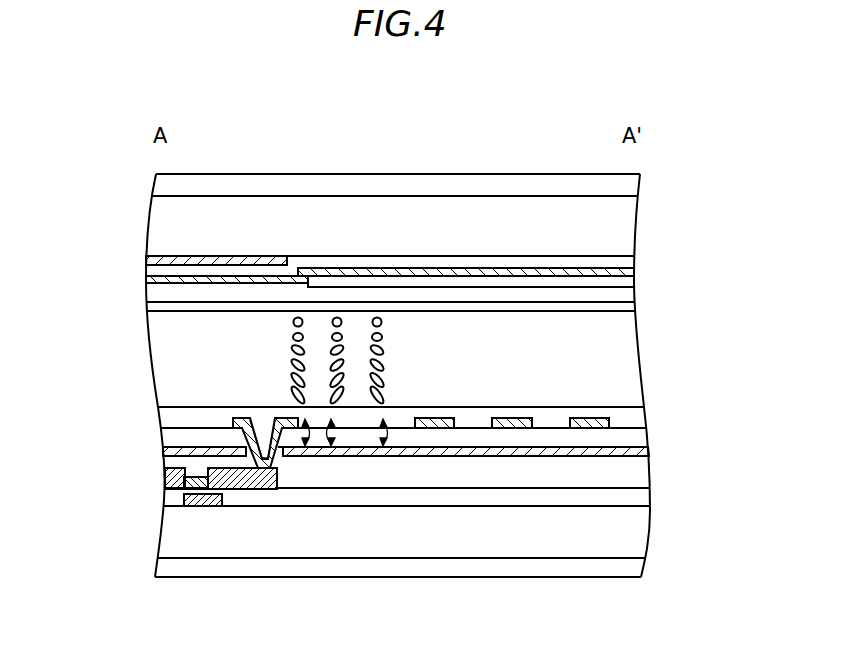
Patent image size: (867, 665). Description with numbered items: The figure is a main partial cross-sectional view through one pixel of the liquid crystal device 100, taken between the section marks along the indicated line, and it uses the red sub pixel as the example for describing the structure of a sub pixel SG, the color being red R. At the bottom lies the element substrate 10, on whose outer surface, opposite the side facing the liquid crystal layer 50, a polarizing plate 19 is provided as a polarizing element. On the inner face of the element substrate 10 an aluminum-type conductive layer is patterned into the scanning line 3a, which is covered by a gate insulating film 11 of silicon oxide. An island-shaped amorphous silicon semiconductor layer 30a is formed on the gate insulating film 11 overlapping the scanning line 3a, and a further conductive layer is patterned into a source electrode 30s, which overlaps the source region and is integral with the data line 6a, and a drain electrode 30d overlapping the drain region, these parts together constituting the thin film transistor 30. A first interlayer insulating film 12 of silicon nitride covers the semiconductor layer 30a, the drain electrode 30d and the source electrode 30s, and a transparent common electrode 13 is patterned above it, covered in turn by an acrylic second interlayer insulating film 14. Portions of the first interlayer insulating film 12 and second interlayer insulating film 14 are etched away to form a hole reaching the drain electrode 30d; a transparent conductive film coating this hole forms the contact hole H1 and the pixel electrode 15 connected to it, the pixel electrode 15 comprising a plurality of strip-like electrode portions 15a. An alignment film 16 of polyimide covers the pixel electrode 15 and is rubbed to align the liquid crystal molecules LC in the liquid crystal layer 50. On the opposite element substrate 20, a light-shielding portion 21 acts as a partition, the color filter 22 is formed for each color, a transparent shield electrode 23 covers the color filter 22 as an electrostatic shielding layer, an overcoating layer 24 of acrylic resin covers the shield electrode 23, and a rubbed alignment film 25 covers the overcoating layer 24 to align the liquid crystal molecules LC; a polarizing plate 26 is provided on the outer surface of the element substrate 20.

The liquid crystal device 100 is at (551, 130).
The sub pixel SG is at (396, 146).
The red color R is at (418, 158).
The polarizing plate 26 is at (625, 188).
The element substrate 20 is at (622, 224).
The light-shielding portion 21 is at (182, 262).
The color filter 22 is at (628, 262).
The shield electrode 23 is at (627, 272).
The overcoating layer 24 is at (625, 292).
The alignment film 25 is at (625, 308).
The liquid crystal layer 50 is at (622, 348).
The liquid crystal molecules LC is at (296, 338).
The alignment film 16 is at (633, 418).
The pixel electrode 15 is at (421, 410).
The strip-like electrode portions 15a is at (512, 418).
The second interlayer insulating film 14 is at (636, 437).
The common electrode 13 is at (638, 452).
The first interlayer insulating film 12 is at (638, 472).
The gate insulating film 11 is at (638, 497).
The element substrate 10 is at (638, 532).
The polarizing plate 19 is at (633, 568).
The contact hole H1 is at (262, 430).
The thin film transistor 30 is at (213, 522).
The source electrode 30s is at (165, 478).
The data line 6a is at (111, 476).
The semiconductor layer 30a is at (183, 488).
The scanning line 3a is at (200, 505).
The drain electrode 30d is at (260, 482).